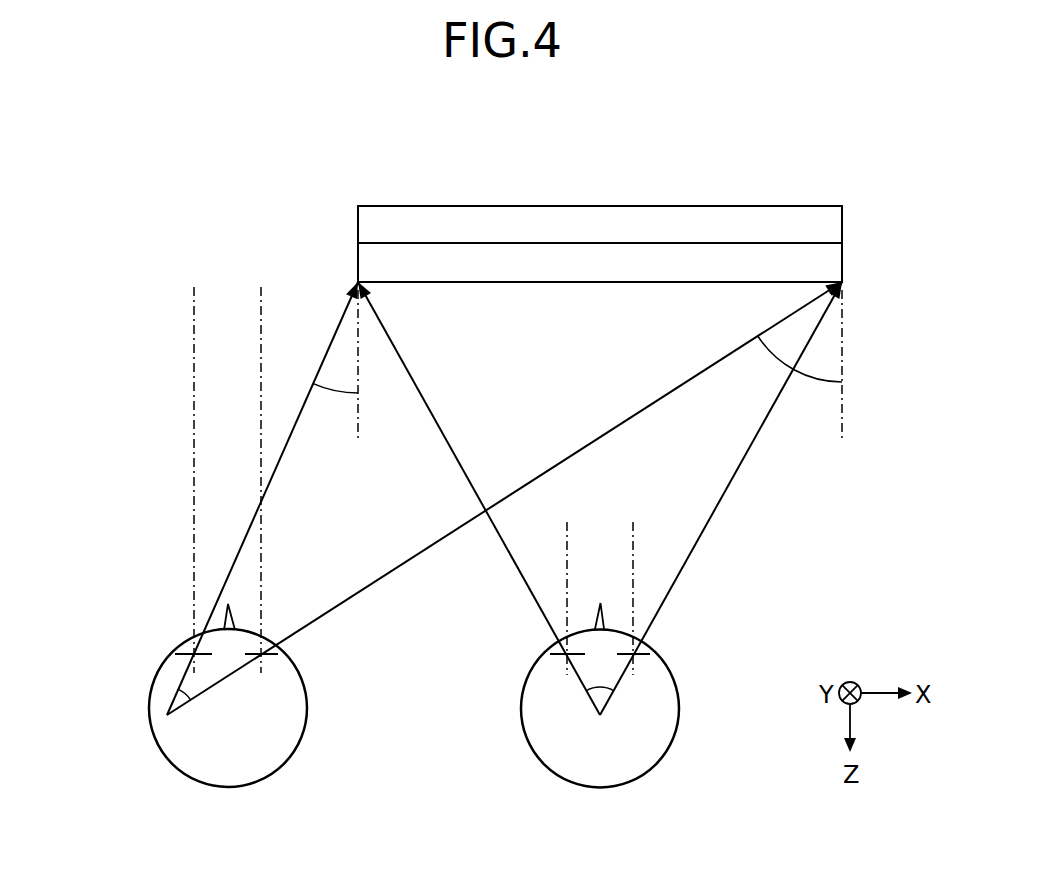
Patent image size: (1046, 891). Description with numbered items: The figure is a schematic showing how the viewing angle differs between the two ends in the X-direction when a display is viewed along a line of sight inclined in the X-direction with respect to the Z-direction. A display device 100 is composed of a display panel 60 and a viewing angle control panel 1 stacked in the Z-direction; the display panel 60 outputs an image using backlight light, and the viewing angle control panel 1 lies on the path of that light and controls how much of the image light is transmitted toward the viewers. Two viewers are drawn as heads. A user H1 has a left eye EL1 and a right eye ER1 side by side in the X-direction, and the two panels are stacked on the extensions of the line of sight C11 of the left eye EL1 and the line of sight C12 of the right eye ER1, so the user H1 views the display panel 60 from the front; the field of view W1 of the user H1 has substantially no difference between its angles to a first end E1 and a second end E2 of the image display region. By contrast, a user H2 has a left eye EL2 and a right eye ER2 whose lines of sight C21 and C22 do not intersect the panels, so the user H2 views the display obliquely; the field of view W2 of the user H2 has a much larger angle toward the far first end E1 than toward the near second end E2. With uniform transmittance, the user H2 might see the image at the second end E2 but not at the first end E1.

The display device 100 is at (352, 192).
The display panel 60 is at (828, 225).
The viewing angle control panel 1 is at (828, 268).
The second end E2 is at (360, 383).
The first end E1 is at (843, 383).
The line of sight of the right eye ER2 C22 is at (195, 468).
The line of sight of the left eye EL2 C21 is at (261, 468).
The line of sight of the right eye ER1 C12 is at (568, 584).
The line of sight of the left eye EL1 C11 is at (635, 584).
The user H2 is at (187, 750).
The right eye ER2 is at (177, 670).
The left eye EL2 is at (268, 657).
The field of view W2 is at (185, 688).
The user H1 is at (548, 713).
The right eye ER1 is at (562, 657).
The left eye EL1 is at (645, 656).
The field of view W1 is at (602, 693).